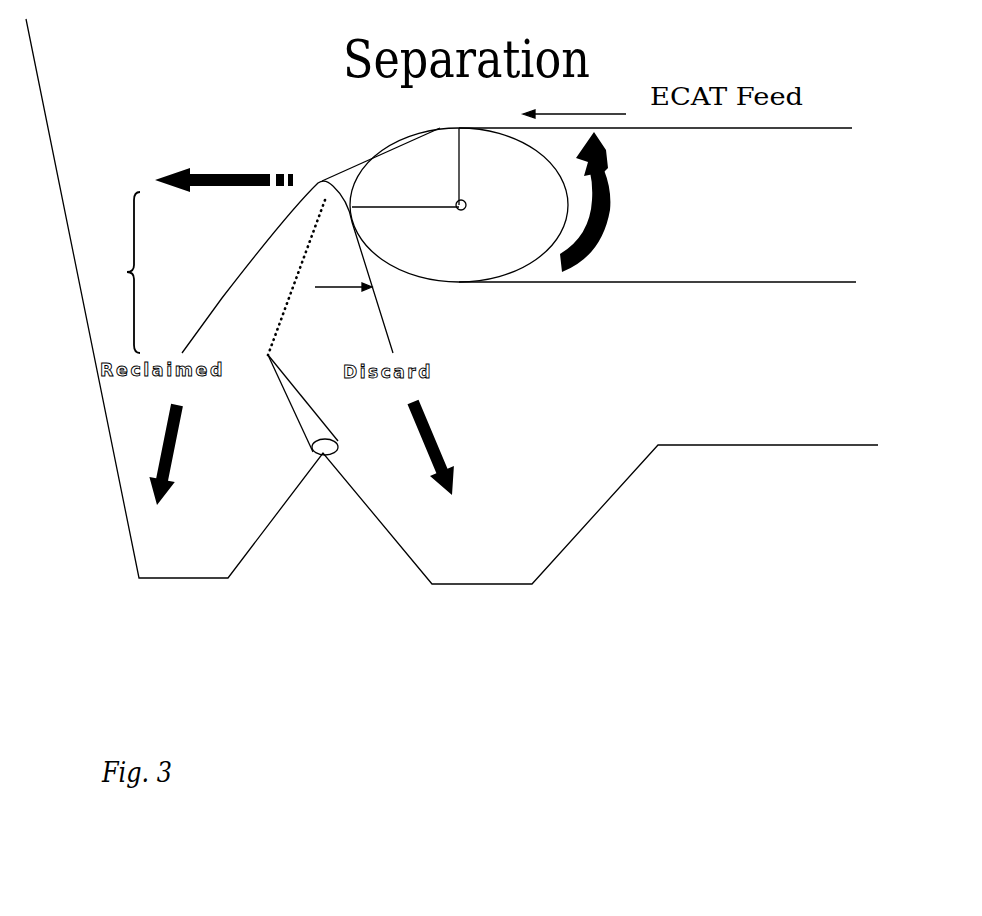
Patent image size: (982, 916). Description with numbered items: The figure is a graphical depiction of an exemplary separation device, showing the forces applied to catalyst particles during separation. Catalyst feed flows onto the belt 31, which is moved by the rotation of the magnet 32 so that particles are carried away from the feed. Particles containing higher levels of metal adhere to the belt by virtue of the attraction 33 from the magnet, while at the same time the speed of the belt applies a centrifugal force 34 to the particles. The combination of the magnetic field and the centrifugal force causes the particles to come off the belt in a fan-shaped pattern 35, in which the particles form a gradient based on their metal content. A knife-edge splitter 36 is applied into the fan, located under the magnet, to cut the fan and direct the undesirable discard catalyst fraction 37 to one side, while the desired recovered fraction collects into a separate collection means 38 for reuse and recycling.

The belt 31 is at (770, 289).
The magnet 32 is at (475, 260).
The magnetic attraction 33 is at (340, 292).
The centrifugal force 34 is at (234, 156).
The fan-shaped pattern 35 is at (119, 272).
The splitter 36 is at (327, 435).
The discard catalyst fraction 37 is at (435, 447).
The collection means 38 is at (153, 454).